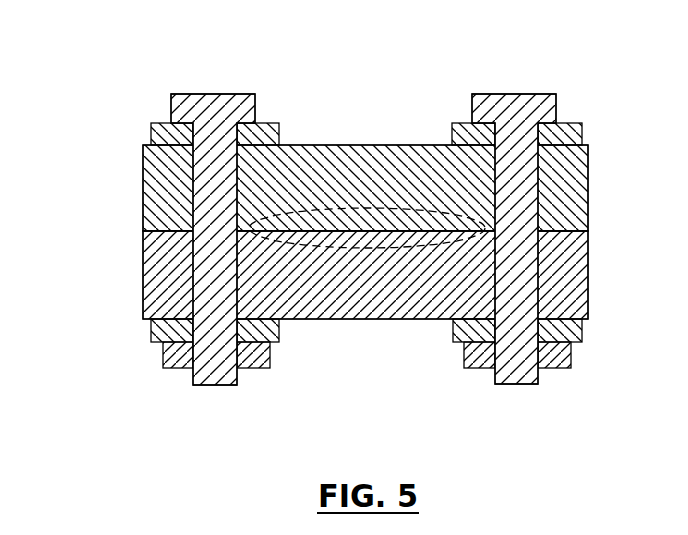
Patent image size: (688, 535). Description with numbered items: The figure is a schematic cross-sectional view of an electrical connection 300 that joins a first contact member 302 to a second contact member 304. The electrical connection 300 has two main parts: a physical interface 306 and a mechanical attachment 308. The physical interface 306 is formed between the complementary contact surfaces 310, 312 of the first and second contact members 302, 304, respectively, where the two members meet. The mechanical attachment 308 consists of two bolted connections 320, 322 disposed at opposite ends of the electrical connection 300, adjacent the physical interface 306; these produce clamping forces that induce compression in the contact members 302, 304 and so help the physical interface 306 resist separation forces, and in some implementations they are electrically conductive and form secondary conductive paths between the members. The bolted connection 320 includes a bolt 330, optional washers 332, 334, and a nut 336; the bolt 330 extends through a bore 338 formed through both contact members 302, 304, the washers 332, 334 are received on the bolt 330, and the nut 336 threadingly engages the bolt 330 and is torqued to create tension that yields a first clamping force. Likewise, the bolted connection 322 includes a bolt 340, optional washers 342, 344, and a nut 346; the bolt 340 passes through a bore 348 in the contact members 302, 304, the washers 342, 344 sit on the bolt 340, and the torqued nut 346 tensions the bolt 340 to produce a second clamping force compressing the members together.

The electrical connection 300 is at (84, 57).
The first contact member 302 is at (153, 172).
The second contact member 304 is at (153, 303).
The physical interface 306 is at (371, 208).
The mechanical attachment 308 is at (129, 122).
The contact surface 310 is at (572, 233).
The contact surface 312 is at (563, 215).
The bolted connection 320 is at (213, 94).
The bolted connection 322 is at (513, 94).
The bolt 330 is at (177, 107).
The washer 332 is at (271, 128).
The washer 334 is at (273, 330).
The nut 336 is at (168, 357).
The bore 338 is at (195, 279).
The bolt 340 is at (480, 108).
The washer 342 is at (573, 133).
The washer 344 is at (573, 335).
The nut 346 is at (477, 357).
The bore 348 is at (537, 279).